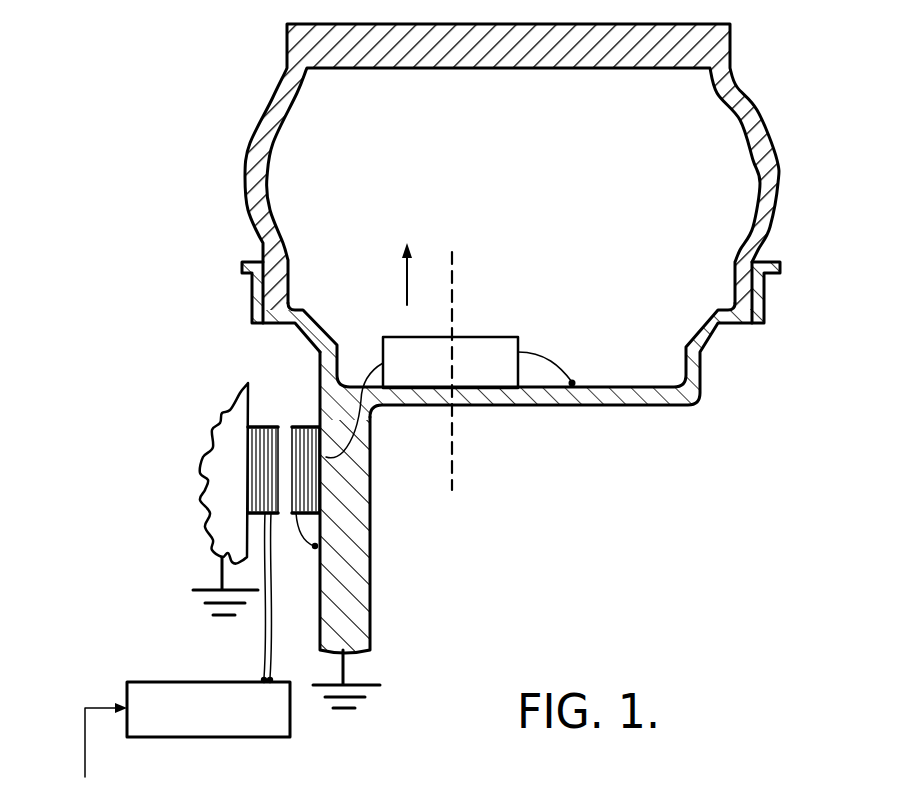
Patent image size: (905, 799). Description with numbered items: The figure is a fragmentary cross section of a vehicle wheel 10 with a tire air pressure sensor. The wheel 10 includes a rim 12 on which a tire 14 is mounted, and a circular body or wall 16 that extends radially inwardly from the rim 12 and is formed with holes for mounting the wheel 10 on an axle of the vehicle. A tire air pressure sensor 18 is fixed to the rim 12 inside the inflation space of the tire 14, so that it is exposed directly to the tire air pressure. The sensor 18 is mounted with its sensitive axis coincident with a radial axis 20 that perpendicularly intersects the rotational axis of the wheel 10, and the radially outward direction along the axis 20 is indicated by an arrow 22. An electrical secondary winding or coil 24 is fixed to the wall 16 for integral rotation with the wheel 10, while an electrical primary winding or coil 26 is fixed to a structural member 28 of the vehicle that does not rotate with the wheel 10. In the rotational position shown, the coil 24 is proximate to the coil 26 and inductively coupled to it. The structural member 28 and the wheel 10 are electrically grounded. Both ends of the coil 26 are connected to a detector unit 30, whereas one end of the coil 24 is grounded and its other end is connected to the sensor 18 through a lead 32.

The wheel 10 is at (160, 270).
The rim 12 is at (633, 408).
The tire 14 is at (266, 112).
The wall 16 is at (320, 633).
The tire air pressure sensor 18 is at (514, 338).
The radial axis 20 is at (459, 273).
The arrow 22 is at (404, 279).
The secondary coil 24 is at (297, 427).
The primary coil 26 is at (251, 426).
The structural member 28 is at (223, 511).
The detector unit 30 is at (190, 683).
The lead 32 is at (380, 412).